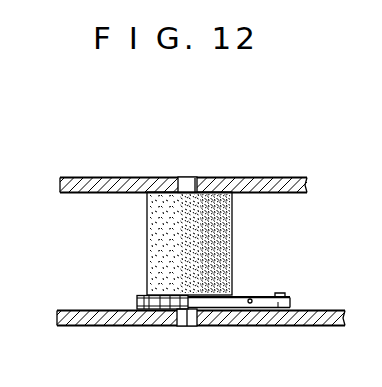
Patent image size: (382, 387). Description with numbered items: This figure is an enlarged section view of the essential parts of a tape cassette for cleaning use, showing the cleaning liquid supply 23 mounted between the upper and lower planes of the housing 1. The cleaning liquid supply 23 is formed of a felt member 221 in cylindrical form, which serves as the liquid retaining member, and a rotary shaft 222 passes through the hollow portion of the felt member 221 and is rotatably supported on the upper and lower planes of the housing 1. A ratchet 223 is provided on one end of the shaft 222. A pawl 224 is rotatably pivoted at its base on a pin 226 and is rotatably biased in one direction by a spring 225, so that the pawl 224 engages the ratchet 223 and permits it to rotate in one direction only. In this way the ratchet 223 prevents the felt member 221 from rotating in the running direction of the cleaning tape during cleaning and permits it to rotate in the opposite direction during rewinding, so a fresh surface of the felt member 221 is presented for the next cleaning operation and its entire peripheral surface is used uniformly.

The housing 1 is at (106, 186).
The cleaning liquid supply 23 is at (243, 218).
The felt member 221 is at (147, 251).
The rotary shaft 222 is at (188, 177).
The ratchet 223 is at (139, 306).
The pawl 224 is at (289, 300).
The spring 225 is at (250, 298).
The pin 226 is at (283, 293).